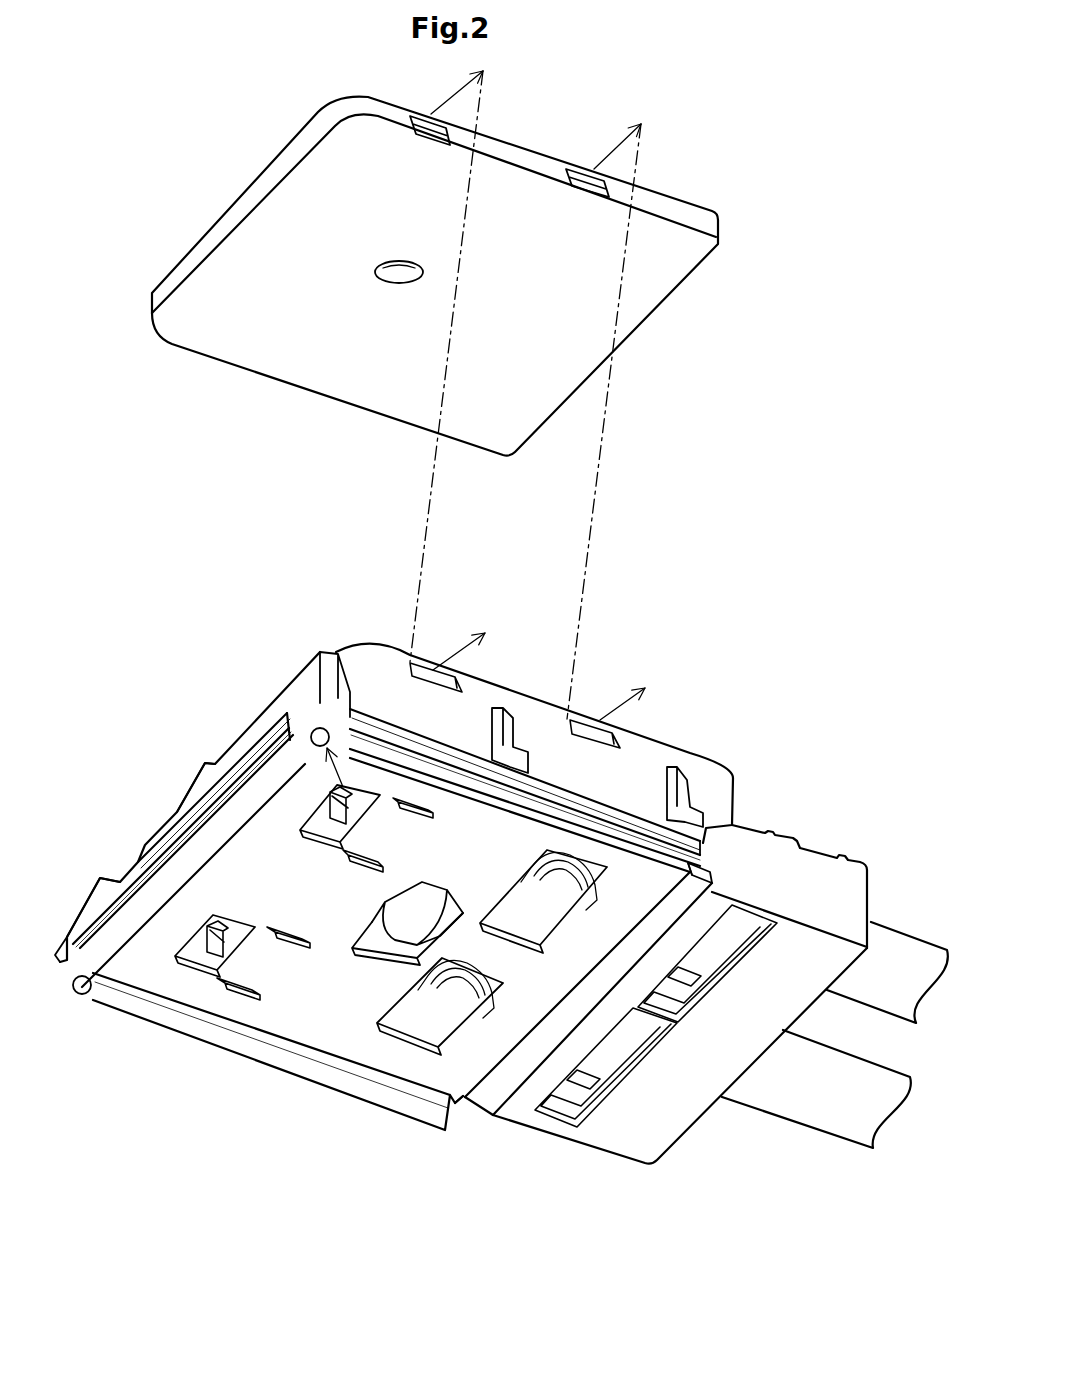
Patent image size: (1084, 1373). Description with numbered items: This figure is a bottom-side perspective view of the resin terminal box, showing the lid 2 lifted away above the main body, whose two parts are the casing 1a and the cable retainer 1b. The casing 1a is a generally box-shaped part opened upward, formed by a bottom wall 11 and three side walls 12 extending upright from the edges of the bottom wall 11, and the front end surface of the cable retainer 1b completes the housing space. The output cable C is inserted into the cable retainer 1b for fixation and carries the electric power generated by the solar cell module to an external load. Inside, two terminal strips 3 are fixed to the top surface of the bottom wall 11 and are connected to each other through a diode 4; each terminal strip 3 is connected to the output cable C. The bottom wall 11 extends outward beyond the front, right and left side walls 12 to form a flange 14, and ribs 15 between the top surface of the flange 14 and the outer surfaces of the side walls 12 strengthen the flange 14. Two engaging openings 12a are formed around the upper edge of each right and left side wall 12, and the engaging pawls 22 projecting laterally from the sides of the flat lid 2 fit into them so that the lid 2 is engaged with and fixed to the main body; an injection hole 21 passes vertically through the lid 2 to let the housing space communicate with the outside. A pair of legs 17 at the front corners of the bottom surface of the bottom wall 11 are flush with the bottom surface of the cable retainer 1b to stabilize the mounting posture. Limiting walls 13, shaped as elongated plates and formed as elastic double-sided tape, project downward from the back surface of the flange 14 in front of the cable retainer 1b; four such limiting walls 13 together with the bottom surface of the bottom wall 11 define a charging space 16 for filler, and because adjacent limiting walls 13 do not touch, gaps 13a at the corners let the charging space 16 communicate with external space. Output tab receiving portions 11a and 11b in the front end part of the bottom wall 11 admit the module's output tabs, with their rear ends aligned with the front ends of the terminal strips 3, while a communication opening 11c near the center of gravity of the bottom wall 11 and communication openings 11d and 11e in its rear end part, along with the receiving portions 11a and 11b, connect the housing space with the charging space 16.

The lid 2 is at (422, 385).
The injection hole 21 is at (398, 284).
The engaging pawl 22 is at (431, 114).
The casing 1a is at (441, 938).
The cable retainer 1b is at (598, 1169).
The bottom wall 11 is at (386, 955).
The output tab receiving portion 11a is at (200, 960).
The output tab receiving portion 11b is at (317, 837).
The communication opening 11c is at (384, 947).
The communication opening 11d is at (417, 1035).
The communication opening 11e is at (527, 922).
The side wall 12 is at (408, 770).
The engaging opening 12a is at (434, 668).
The limiting wall 13 is at (450, 965).
The gap 13a is at (345, 793).
The flange 14 is at (160, 858).
The rib 15 is at (310, 686).
The charging space 16 is at (358, 1028).
The leg 17 is at (316, 728).
The terminal strip 3 is at (208, 930).
The diode 4 is at (402, 912).
The output cable C is at (892, 930).